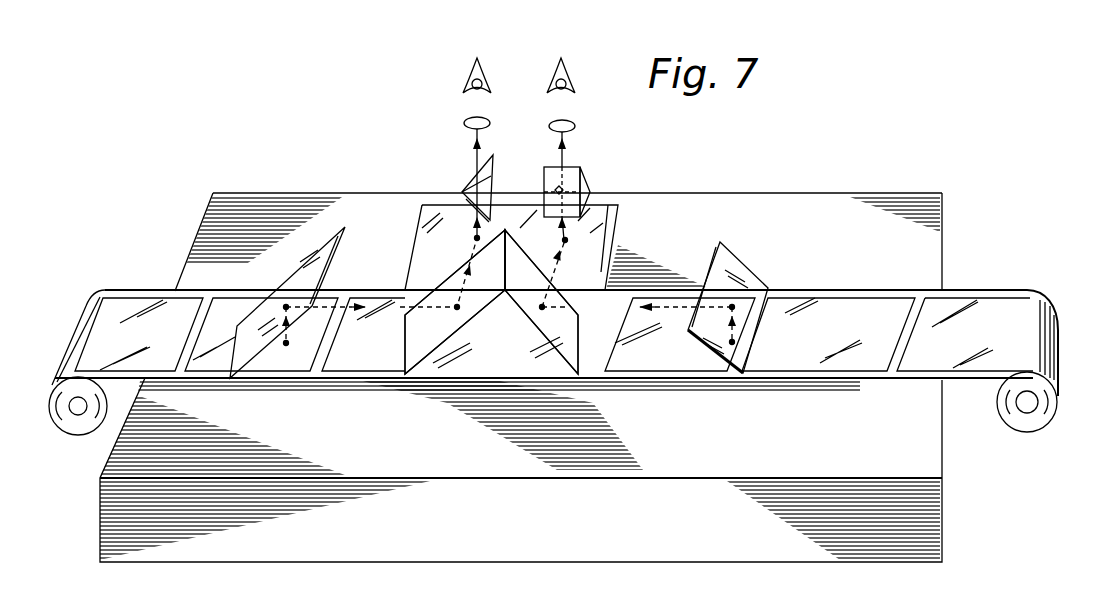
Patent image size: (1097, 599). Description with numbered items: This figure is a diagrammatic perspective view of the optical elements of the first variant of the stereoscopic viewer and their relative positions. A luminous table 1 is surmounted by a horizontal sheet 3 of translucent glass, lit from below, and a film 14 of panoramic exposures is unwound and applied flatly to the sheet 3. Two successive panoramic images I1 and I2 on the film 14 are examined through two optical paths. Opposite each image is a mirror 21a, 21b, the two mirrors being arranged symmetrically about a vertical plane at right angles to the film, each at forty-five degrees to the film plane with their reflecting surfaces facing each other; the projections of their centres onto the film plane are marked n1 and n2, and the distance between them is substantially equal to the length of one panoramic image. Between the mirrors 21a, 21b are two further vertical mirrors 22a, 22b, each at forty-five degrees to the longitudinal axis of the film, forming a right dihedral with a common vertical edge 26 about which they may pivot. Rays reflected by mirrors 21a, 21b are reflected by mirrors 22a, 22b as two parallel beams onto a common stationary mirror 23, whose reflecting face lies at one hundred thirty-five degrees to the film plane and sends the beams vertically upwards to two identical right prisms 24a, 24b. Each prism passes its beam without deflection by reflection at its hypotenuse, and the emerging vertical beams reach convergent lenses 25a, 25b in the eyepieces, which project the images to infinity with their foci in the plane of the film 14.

The luminous table 1 is at (926, 190).
The horizontal sheet of translucent glass 3 is at (783, 206).
The film 14 is at (218, 293).
The mirror 21a is at (277, 338).
The mirror 21b is at (749, 315).
The mirror 22a is at (430, 343).
The mirror 22b is at (557, 336).
The common stationary mirror 23 is at (417, 243).
The prism 24a is at (472, 196).
The prism 24b is at (587, 190).
The convergent lens 25a is at (466, 119).
The convergent lens 25b is at (576, 126).
The vertical edge 26 is at (502, 278).
The panoramic image I1 is at (653, 352).
The panoramic image I2 is at (345, 345).
The projection of the centre of mirror 21a n1 is at (288, 350).
The projection of the centre of mirror 21b n2 is at (734, 346).